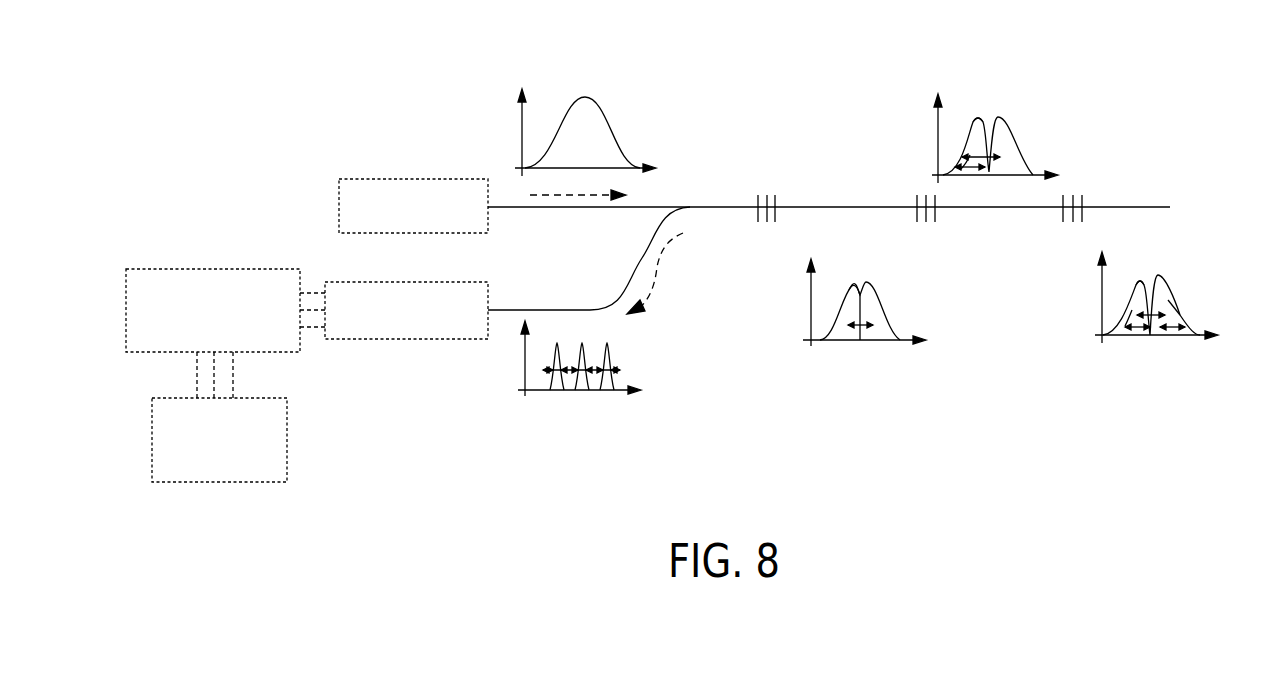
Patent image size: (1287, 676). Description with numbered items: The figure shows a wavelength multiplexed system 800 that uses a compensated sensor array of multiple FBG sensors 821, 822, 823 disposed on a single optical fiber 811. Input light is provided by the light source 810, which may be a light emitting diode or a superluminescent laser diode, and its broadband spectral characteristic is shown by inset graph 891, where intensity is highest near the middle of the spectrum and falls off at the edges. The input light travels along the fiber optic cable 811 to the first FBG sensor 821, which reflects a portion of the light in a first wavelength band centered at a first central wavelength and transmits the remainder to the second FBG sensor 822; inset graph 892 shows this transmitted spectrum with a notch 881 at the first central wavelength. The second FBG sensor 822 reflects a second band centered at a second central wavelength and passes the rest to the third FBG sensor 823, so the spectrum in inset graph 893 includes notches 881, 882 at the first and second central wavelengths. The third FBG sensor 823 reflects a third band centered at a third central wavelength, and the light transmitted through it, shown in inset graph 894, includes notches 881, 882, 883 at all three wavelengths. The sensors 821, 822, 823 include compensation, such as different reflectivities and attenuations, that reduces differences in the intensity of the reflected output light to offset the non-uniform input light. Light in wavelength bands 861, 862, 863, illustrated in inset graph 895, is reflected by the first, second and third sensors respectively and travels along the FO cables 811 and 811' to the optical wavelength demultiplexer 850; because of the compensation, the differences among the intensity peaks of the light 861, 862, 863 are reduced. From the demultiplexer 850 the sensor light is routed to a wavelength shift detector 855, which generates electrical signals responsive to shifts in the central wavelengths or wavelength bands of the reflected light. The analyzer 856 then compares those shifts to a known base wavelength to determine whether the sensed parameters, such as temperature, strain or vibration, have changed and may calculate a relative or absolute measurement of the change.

The wavelength multiplexed system 800 is at (782, 94).
The light source 810 is at (432, 179).
The optical fiber 811 is at (829, 172).
The FO cable 811' is at (589, 260).
The first FBG sensor 821 is at (778, 200).
The second FBG sensor 822 is at (937, 217).
The third FBG sensor 823 is at (1085, 198).
The optical wavelength demultiplexer 850 is at (412, 340).
The wavelength shift detector 855 is at (233, 268).
The analyzer 856 is at (288, 442).
The wavelength band 861 is at (585, 389).
The wavelength band 862 is at (556, 352).
The wavelength band 863 is at (610, 358).
The notch 881 is at (981, 118).
The notch 882 is at (970, 155).
The notch 883 is at (1175, 308).
The inset graph 891 is at (600, 112).
The inset graph 892 is at (890, 323).
The inset graph 893 is at (1008, 143).
The inset graph 894 is at (1160, 277).
The inset graph 895 is at (670, 368).